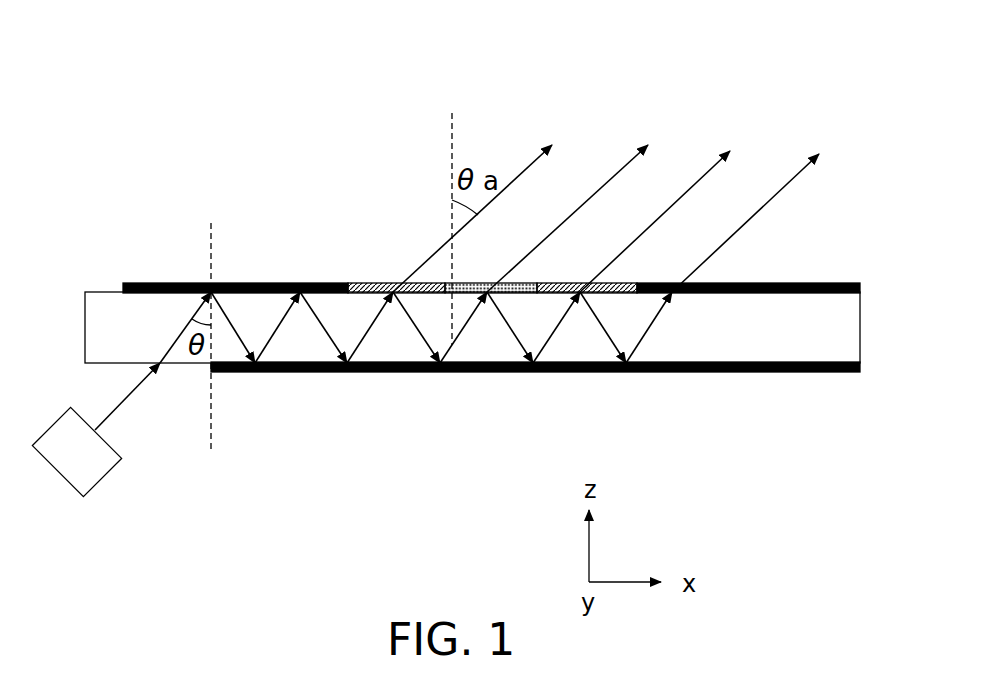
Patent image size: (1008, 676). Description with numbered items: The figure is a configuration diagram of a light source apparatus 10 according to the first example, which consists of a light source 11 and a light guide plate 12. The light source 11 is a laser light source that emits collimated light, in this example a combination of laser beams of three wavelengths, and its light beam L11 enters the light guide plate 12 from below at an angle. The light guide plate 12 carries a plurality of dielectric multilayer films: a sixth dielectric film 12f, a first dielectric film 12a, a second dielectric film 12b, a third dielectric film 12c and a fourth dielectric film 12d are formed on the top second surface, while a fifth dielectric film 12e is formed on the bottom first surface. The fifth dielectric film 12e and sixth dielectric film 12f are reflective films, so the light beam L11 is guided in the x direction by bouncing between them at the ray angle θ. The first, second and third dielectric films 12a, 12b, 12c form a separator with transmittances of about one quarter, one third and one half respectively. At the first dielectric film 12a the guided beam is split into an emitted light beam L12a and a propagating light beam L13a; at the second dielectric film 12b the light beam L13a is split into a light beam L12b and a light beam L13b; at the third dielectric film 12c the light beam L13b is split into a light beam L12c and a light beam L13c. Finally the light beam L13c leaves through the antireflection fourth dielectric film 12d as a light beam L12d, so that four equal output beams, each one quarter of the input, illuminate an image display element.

The light source apparatus 10 is at (808, 31).
The light source 11 is at (102, 483).
The light guide plate 12 is at (85, 352).
The first dielectric film 12a is at (382, 283).
The second dielectric film 12b is at (470, 283).
The third dielectric film 12c is at (557, 283).
The fourth dielectric film 12d is at (803, 283).
The fifth dielectric film 12e is at (830, 372).
The sixth dielectric film 12f is at (182, 283).
The light beam L11 is at (138, 393).
The light beam L12a is at (496, 201).
The light beam L12b is at (591, 200).
The light beam L12c is at (682, 200).
The light beam L12d is at (773, 200).
The light beam L13a is at (420, 343).
The light beam L13b is at (513, 340).
The light beam L13c is at (640, 335).